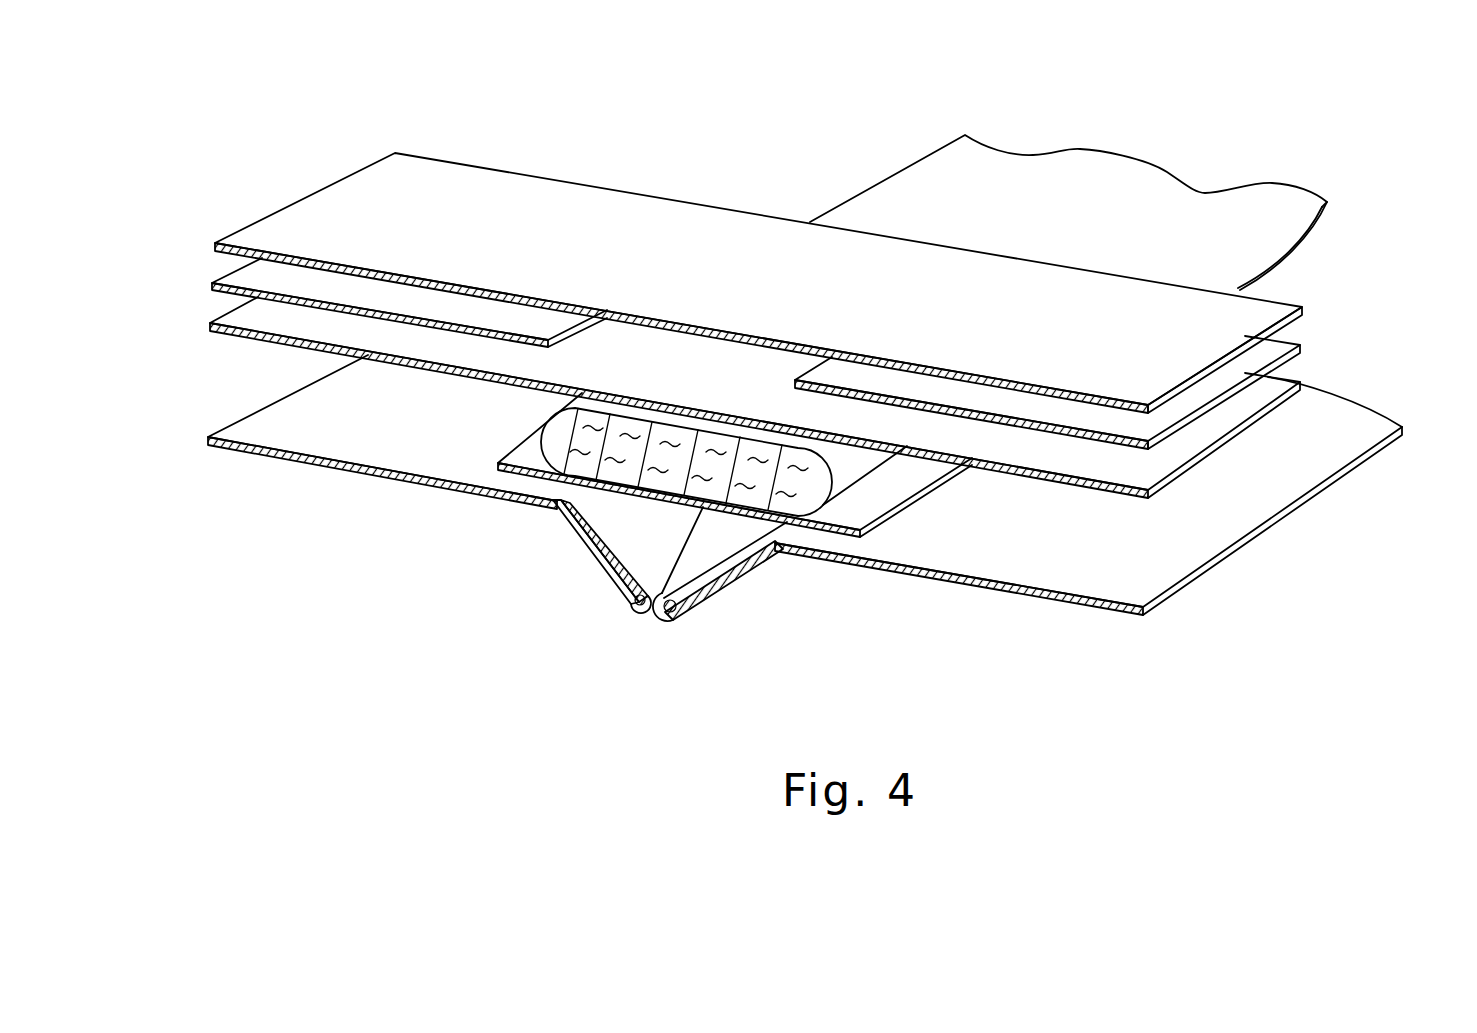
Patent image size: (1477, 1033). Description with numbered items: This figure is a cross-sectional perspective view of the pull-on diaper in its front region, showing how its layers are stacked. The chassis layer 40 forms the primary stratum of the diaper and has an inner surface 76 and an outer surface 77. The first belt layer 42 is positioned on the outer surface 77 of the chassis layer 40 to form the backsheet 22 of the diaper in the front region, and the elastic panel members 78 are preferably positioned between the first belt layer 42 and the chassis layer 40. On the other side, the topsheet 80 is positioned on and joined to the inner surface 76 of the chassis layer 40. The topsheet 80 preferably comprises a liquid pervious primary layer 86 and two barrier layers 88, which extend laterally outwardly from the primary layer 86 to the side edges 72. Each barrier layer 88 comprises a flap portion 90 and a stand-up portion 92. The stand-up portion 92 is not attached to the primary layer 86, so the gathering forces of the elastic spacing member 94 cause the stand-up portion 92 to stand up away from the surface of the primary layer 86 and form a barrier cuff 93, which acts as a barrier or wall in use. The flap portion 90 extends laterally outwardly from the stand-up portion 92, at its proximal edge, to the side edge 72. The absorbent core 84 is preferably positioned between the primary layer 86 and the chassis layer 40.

The backsheet 22 is at (977, 283).
The first belt layer 42 is at (729, 275).
The elastic panel members 78 is at (367, 297).
The chassis layer 40 is at (716, 385).
The inner surface 76 is at (1118, 492).
The outer surface 77 is at (1187, 447).
The primary layer 86 is at (866, 508).
The absorbent core 84 is at (828, 478).
The side edges 72 is at (272, 402).
The barrier layers 88 is at (371, 428).
The flap portion 90 is at (352, 472).
The topsheet 80 is at (1002, 548).
The stand-up portion 92 is at (575, 533).
The barrier cuff 93 is at (592, 580).
The elastic spacing member 94 is at (637, 600).